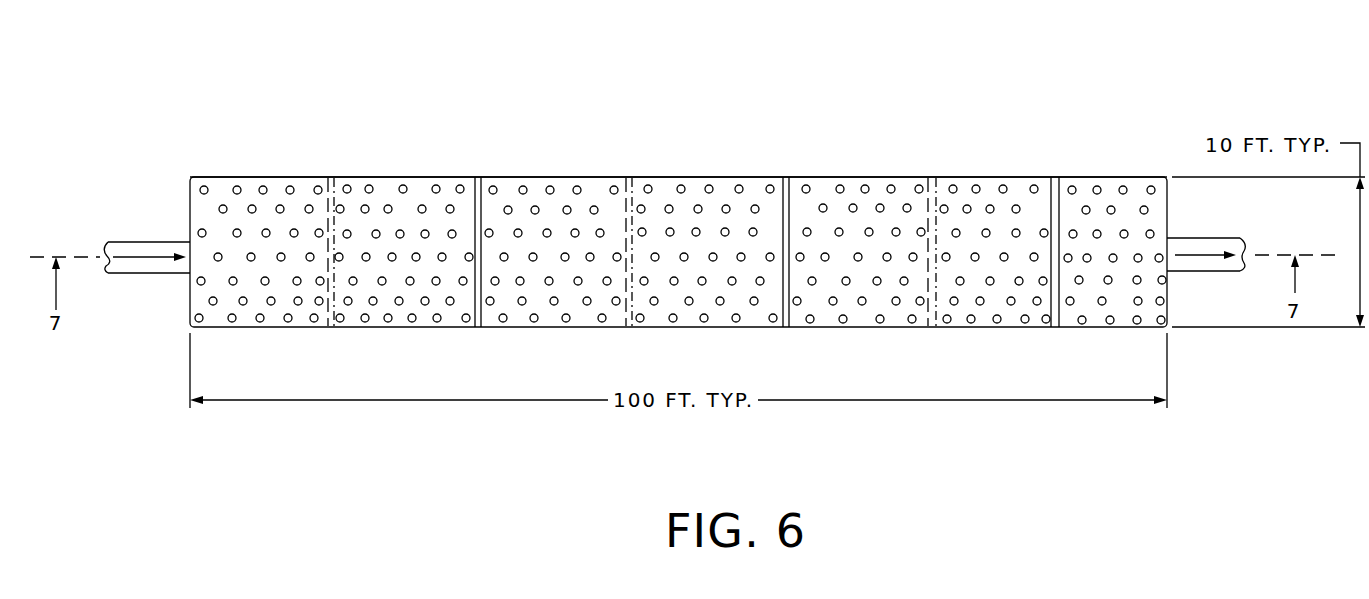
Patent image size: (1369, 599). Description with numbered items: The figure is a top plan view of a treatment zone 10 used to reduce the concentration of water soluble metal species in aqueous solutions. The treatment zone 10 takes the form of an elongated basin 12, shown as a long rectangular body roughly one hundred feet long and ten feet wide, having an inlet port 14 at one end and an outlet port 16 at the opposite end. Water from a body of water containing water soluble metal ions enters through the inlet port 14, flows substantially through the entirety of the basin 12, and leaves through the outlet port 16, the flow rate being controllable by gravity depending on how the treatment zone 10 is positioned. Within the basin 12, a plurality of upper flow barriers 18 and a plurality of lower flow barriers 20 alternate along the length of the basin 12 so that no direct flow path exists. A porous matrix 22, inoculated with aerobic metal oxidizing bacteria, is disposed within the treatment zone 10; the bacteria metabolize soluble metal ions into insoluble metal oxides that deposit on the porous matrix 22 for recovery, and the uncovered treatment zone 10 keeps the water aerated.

The treatment zone 10 is at (781, 130).
The basin 12 is at (657, 177).
The inlet port 14 is at (171, 268).
The outlet port 16 is at (1188, 263).
The upper flow barriers 18 is at (482, 207).
The lower flow barriers 20 is at (327, 203).
The porous matrix 22 is at (402, 225).